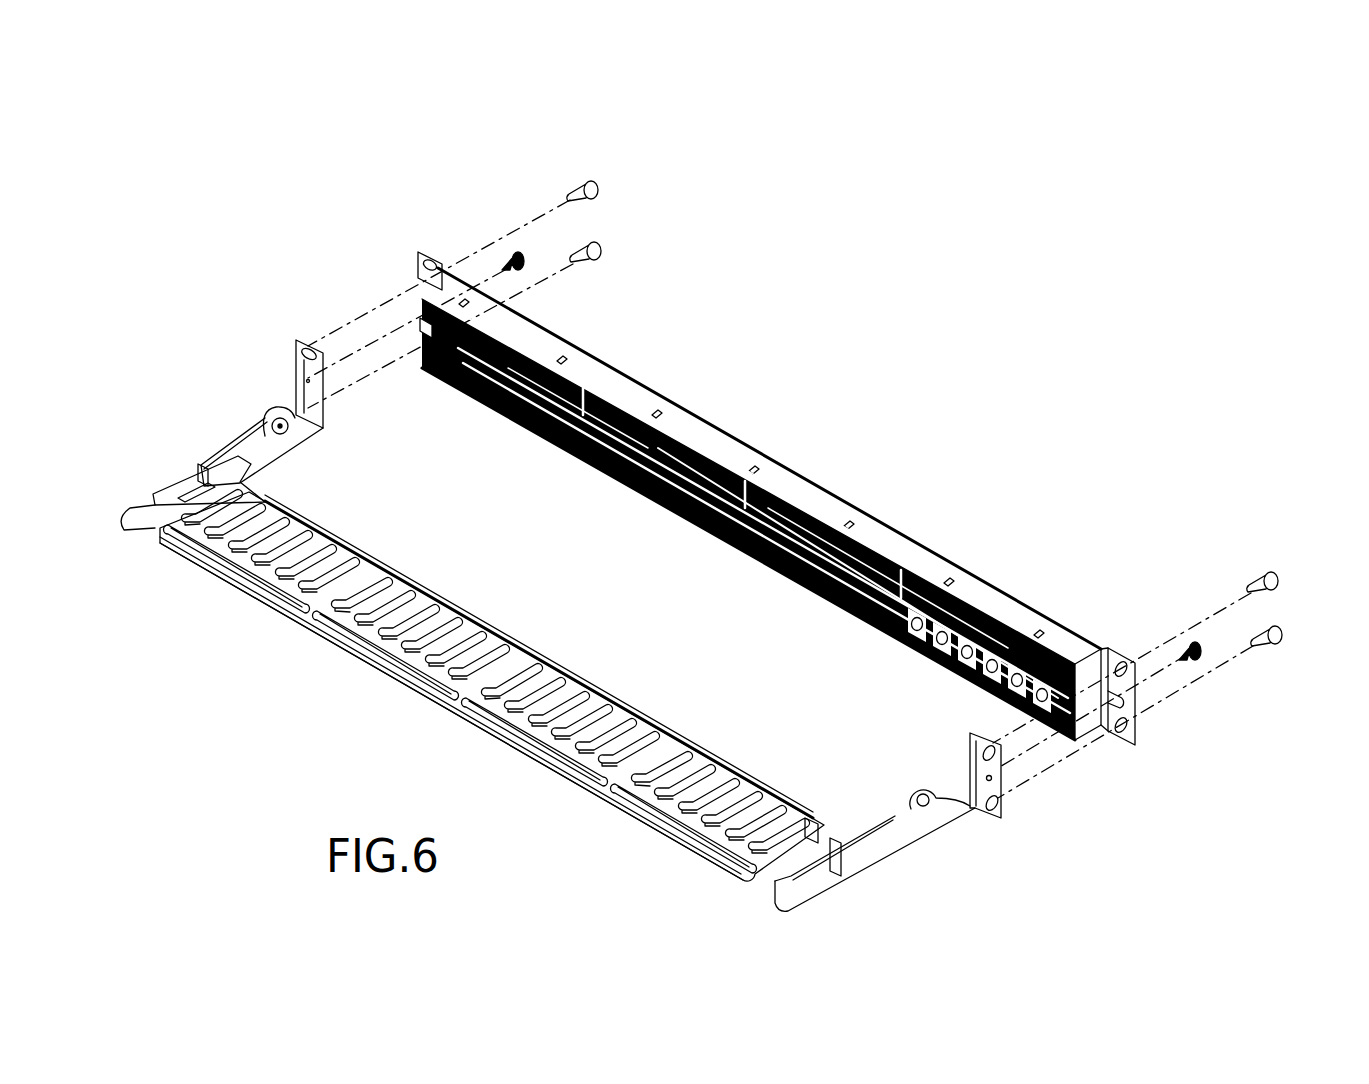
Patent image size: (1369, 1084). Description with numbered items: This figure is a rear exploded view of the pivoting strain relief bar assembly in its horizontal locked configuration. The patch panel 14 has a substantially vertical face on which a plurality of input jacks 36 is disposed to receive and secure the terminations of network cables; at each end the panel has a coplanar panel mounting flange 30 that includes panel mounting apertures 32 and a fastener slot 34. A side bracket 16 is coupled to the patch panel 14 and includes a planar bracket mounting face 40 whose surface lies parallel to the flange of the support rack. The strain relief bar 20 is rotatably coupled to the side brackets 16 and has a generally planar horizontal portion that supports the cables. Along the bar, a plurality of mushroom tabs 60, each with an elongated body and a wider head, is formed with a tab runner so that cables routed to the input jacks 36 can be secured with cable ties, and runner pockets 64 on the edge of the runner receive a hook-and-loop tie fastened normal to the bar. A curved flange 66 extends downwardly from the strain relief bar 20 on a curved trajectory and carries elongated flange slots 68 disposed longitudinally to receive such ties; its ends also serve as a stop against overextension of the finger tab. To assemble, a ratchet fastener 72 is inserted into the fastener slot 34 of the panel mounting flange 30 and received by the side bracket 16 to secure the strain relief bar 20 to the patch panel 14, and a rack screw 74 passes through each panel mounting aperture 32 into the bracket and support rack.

The patch panel 14 is at (803, 455).
The side bracket 16 is at (900, 843).
The strain relief bar 20 is at (638, 694).
The panel mounting flange 30 is at (1103, 650).
The panel mounting aperture 32 is at (1111, 728).
The fastener slot 34 is at (1122, 695).
The input jacks 36 is at (792, 576).
The bracket mounting face 40 is at (976, 802).
The mushroom tabs 60 is at (412, 600).
The runner pocket 64 is at (247, 484).
The curved flange 66 is at (372, 667).
The elongated flange slot 68 is at (247, 572).
The ratchet fastener 72 is at (518, 244).
The rack screw 74 is at (592, 174).